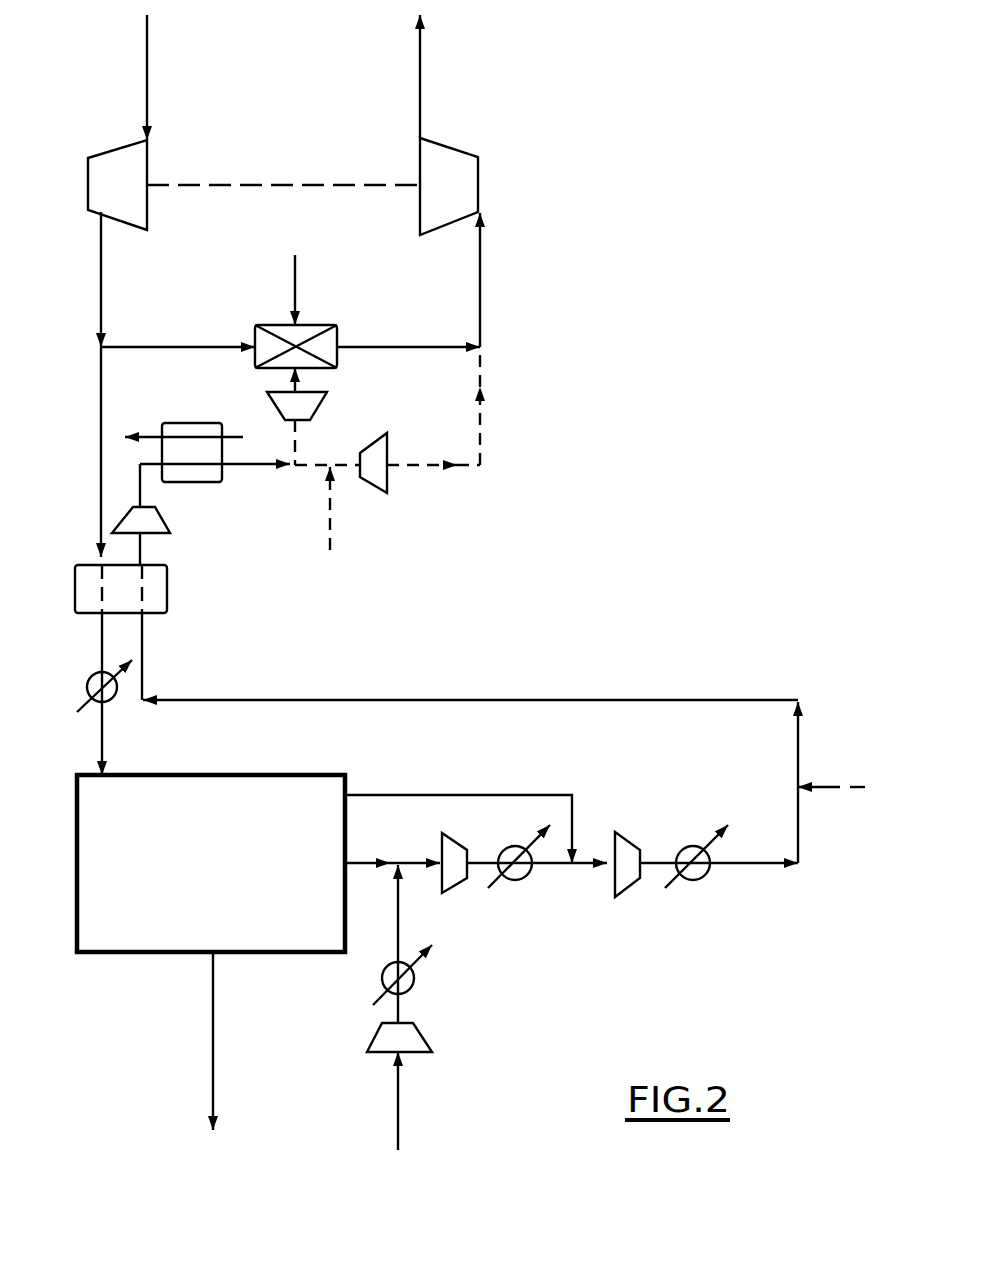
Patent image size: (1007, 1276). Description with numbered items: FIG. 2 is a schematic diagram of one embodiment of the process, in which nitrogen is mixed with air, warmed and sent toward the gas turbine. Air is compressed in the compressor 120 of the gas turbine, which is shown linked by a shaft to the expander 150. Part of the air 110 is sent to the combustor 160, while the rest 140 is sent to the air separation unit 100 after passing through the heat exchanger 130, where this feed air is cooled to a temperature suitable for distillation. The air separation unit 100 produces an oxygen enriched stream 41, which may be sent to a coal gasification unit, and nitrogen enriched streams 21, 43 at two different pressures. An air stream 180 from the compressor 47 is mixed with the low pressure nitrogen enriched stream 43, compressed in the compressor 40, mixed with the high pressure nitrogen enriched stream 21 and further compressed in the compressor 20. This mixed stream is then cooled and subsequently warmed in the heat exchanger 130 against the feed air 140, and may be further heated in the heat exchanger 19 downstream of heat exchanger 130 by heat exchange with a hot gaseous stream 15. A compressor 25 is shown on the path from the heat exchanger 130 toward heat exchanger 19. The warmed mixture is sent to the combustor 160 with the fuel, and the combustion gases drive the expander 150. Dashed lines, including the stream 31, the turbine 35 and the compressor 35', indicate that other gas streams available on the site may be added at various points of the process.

The compressor 120 is at (125, 160).
The turbine 150 is at (455, 170).
The feed air 140 is at (100, 442).
The air 110 is at (190, 345).
The combustor 160 is at (310, 325).
The compressor 35' is at (330, 416).
The hot gaseous stream 15 is at (200, 430).
The heat exchanger 19 is at (205, 478).
The compressor 25 is at (163, 522).
The turbine 35 is at (387, 420).
The feed line 31 is at (332, 500).
The heat exchanger 130 is at (170, 590).
The air separation unit 100 is at (240, 795).
The high pressure nitrogen enriched stream 21 is at (458, 795).
The low pressure nitrogen enriched stream 43 is at (355, 863).
The compressor 40 is at (450, 855).
The compressor 20 is at (635, 848).
The oxygen enriched stream 41 is at (210, 1005).
The compressor 47 is at (410, 1040).
The air stream 180 is at (400, 1100).